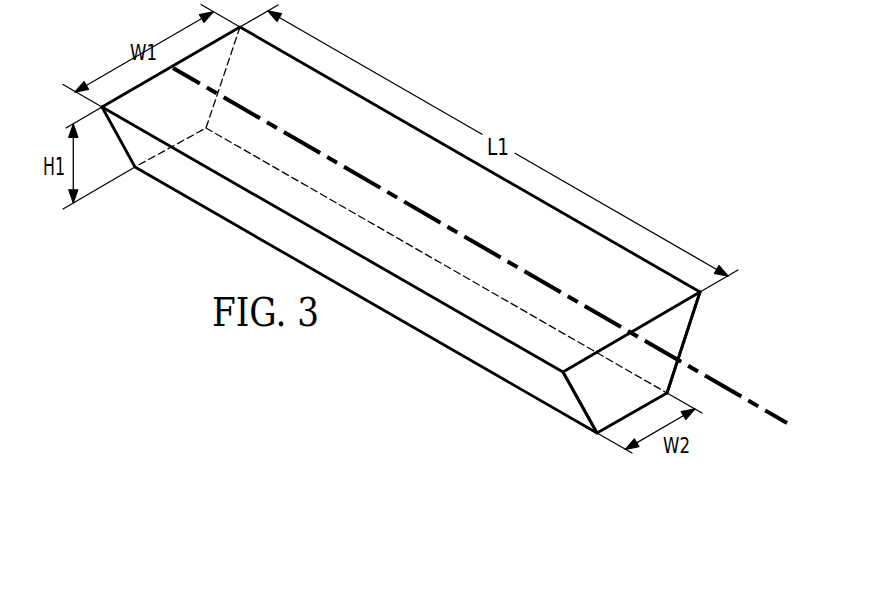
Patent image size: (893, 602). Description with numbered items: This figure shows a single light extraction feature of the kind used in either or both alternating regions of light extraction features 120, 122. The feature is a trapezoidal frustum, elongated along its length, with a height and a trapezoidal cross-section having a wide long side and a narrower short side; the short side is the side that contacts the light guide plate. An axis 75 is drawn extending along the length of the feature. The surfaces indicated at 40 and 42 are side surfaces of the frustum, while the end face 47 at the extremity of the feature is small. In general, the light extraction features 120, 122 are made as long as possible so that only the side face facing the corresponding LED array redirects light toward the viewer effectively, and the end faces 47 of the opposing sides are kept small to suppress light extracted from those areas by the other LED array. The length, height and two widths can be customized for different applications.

The light extraction features 120 is at (424, 254).
The light extraction features 122 is at (424, 254).
The first side wall 40 is at (568, 386).
The second side wall 42 is at (689, 325).
The end face 47 is at (590, 398).
The axis 75 is at (771, 407).